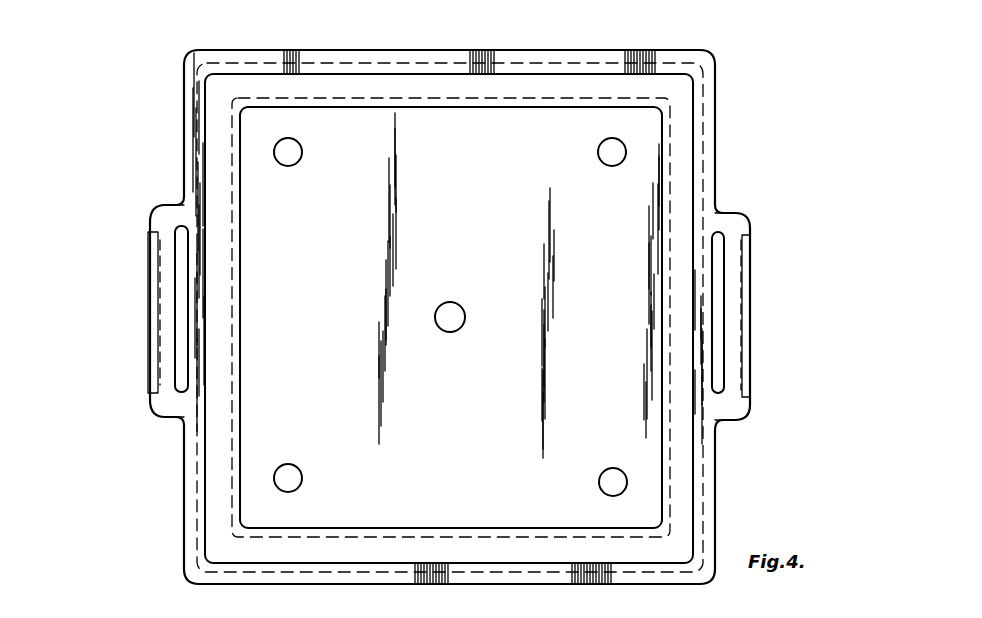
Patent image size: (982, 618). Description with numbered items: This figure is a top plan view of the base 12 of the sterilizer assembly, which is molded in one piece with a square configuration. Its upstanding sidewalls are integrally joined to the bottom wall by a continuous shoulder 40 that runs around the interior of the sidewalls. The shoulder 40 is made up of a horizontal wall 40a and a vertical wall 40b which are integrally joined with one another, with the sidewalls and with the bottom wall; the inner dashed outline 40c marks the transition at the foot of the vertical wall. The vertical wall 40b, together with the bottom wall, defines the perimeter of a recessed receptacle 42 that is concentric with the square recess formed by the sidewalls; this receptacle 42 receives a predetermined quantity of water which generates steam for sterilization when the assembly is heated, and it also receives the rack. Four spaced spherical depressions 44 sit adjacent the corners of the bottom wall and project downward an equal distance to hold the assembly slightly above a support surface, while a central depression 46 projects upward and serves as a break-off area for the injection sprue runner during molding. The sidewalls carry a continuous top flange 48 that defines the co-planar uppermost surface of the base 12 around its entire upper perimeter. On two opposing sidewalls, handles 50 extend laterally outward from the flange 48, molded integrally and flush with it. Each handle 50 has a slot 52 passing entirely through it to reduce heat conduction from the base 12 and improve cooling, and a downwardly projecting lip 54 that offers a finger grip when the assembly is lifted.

The base 12 is at (662, 48).
The shoulder 40 is at (708, 508).
The horizontal wall 40a is at (218, 150).
The vertical wall 40b is at (243, 345).
The bottom wall of frame 40c is at (522, 545).
The recessed receptacle 42 is at (632, 417).
The spherical depressions 44 is at (287, 167).
The central depression 46 is at (445, 330).
The top flange 48 is at (190, 92).
The handles 50 is at (170, 248).
The slot 52 is at (178, 296).
The downwardly projecting lip 54 is at (160, 335).